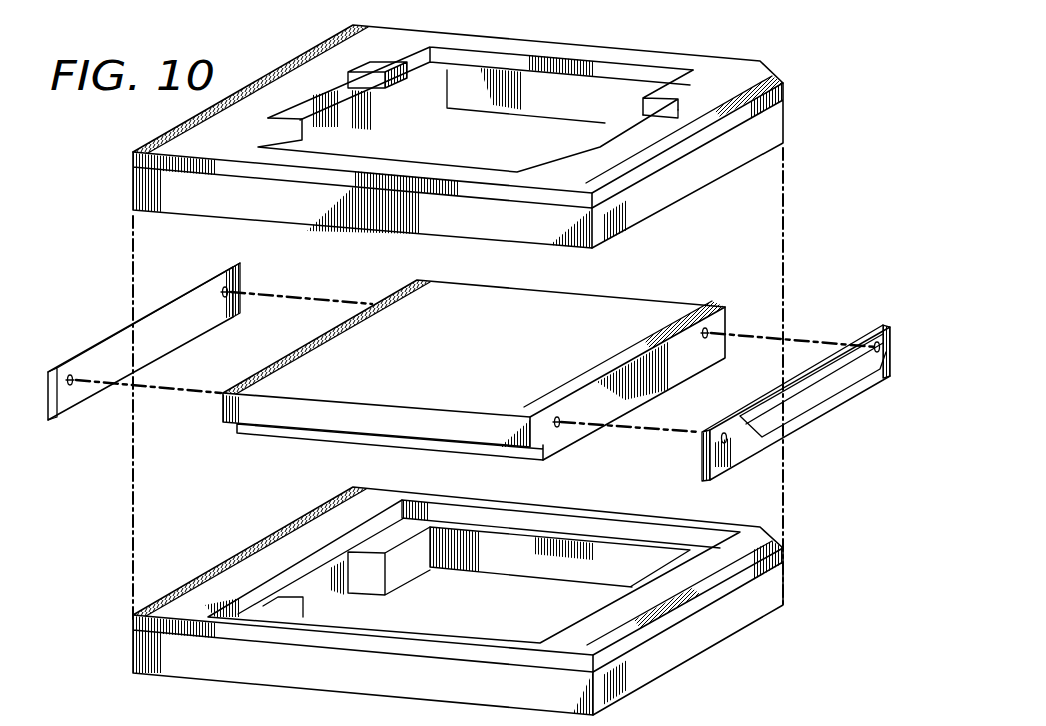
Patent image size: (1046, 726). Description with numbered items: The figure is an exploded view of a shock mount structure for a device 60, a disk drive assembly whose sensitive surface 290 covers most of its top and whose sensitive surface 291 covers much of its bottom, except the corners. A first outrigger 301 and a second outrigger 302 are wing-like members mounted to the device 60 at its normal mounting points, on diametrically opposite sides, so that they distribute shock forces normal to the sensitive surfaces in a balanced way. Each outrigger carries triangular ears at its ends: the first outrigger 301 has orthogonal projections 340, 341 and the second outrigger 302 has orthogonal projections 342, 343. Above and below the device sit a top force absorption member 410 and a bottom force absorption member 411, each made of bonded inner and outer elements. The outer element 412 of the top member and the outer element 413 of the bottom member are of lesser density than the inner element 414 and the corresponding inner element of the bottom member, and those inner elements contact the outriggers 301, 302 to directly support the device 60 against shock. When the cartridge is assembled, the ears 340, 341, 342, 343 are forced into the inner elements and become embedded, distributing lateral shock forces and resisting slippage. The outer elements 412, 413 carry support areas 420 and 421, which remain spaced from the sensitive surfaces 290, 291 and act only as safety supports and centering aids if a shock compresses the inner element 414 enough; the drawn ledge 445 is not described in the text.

The top force absorption member 410 is at (709, 50).
The outer element 412 is at (296, 69).
The inner element 414 is at (708, 174).
The support areas 420 is at (630, 98).
The device 60 is at (637, 293).
The sensitive surface 290 is at (466, 358).
The sensitive surface 291 is at (276, 438).
The second outrigger 302 is at (190, 334).
The orthogonal projection 342 is at (64, 366).
The orthogonal projection 343 is at (184, 296).
The orthogonal projection 340 is at (749, 440).
The first outrigger 301 is at (815, 411).
The orthogonal projection 341 is at (870, 385).
The bottom force absorption member 411 is at (771, 622).
The outer element 413 is at (667, 660).
The tray recess ledge 445 is at (640, 520).
The support areas 421 is at (645, 579).